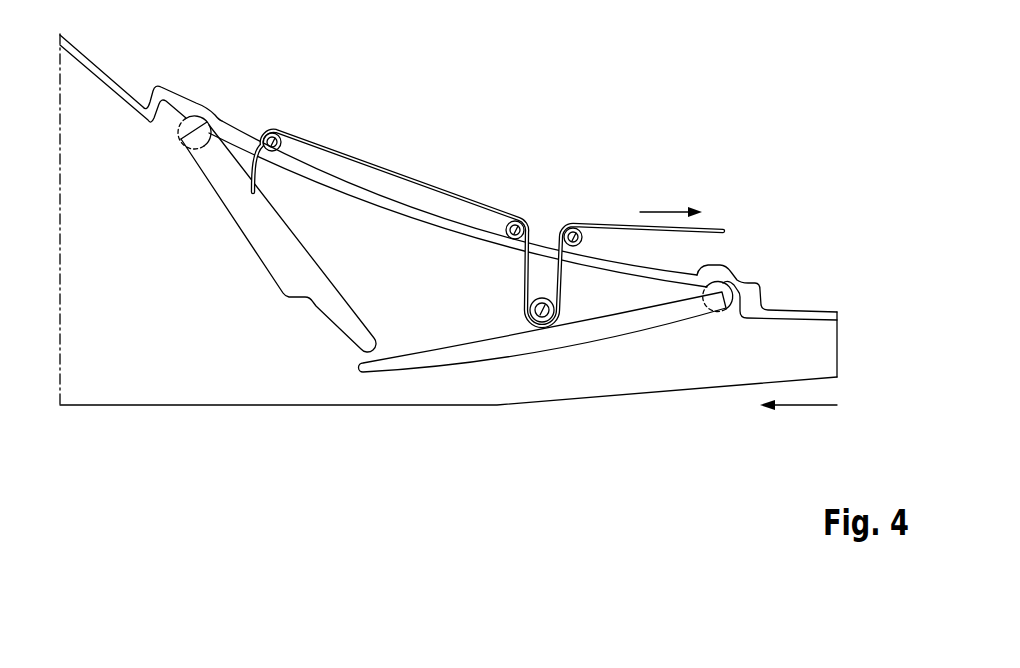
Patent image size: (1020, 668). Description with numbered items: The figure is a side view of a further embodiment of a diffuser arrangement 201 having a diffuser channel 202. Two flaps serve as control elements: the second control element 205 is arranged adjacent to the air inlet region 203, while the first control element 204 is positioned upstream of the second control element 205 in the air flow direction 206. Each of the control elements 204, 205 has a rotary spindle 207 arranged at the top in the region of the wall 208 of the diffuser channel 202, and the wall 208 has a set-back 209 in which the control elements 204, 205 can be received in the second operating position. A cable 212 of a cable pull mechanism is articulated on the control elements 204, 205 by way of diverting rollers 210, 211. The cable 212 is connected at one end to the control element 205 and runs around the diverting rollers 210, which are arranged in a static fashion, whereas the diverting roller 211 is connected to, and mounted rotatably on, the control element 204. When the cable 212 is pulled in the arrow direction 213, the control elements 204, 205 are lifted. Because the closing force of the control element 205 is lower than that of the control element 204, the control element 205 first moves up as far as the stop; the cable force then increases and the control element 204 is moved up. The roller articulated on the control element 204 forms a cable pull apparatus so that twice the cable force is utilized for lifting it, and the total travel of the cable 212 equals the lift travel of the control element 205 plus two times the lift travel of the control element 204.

The diffuser arrangement 201 is at (735, 113).
The diffuser channel 202 is at (160, 372).
The air inlet region 203 is at (815, 345).
The first control element 204 is at (642, 323).
The second control element 205 is at (253, 233).
The air flow direction 206 is at (800, 408).
The rotary spindle 207 is at (192, 121).
The wall 208 is at (345, 192).
The set-back 209 is at (410, 210).
The diverting rollers 210 is at (270, 133).
The diverting roller 211 is at (543, 312).
The cable 212 is at (718, 230).
The arrow direction 213 is at (663, 212).